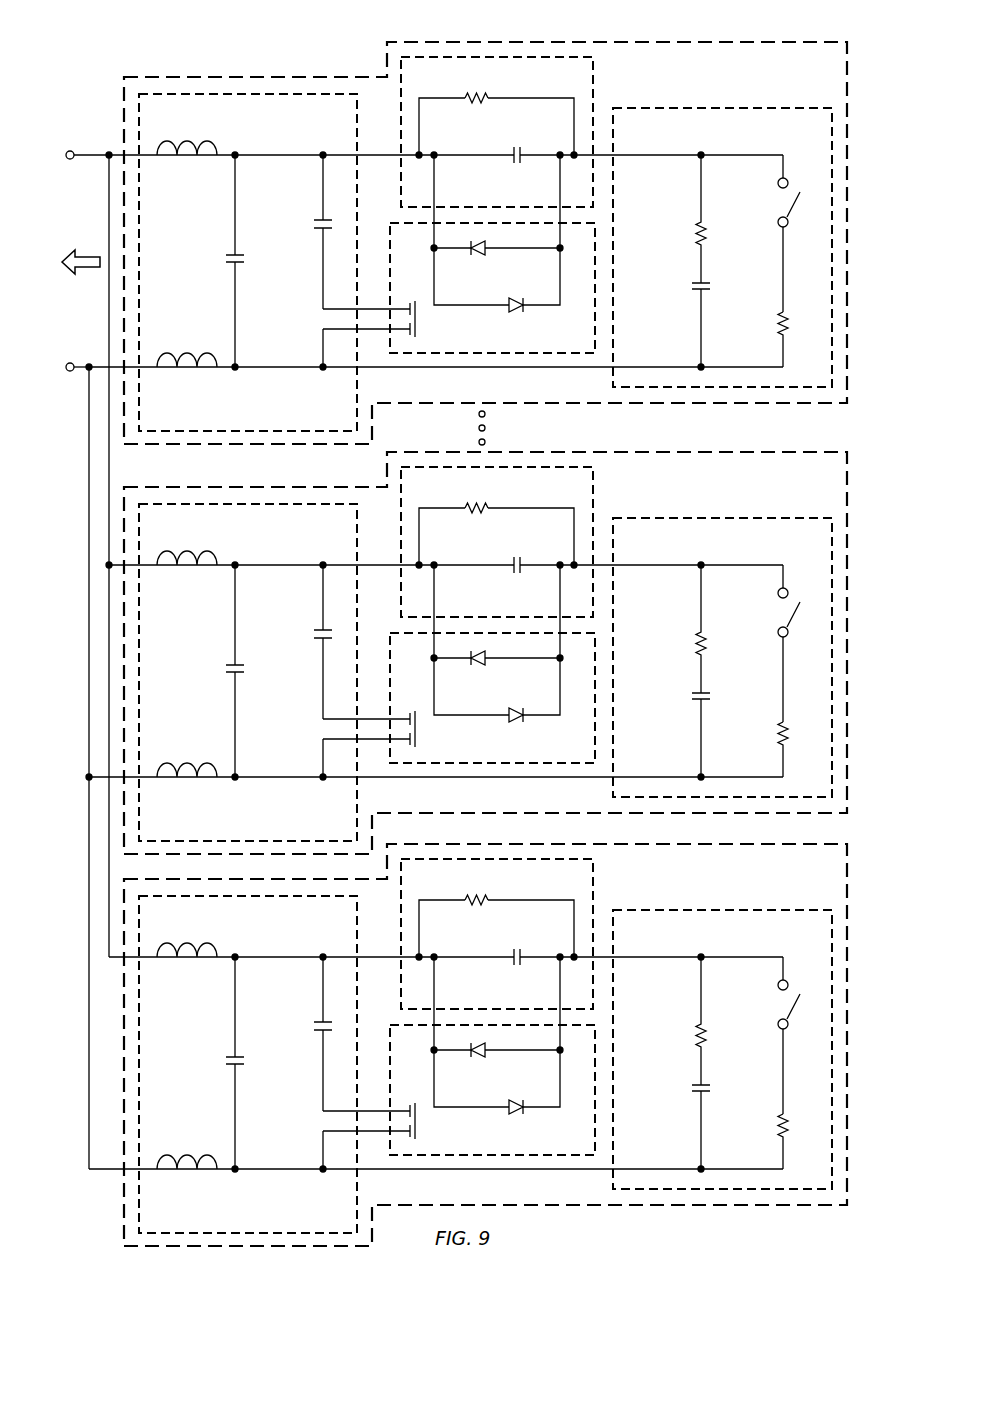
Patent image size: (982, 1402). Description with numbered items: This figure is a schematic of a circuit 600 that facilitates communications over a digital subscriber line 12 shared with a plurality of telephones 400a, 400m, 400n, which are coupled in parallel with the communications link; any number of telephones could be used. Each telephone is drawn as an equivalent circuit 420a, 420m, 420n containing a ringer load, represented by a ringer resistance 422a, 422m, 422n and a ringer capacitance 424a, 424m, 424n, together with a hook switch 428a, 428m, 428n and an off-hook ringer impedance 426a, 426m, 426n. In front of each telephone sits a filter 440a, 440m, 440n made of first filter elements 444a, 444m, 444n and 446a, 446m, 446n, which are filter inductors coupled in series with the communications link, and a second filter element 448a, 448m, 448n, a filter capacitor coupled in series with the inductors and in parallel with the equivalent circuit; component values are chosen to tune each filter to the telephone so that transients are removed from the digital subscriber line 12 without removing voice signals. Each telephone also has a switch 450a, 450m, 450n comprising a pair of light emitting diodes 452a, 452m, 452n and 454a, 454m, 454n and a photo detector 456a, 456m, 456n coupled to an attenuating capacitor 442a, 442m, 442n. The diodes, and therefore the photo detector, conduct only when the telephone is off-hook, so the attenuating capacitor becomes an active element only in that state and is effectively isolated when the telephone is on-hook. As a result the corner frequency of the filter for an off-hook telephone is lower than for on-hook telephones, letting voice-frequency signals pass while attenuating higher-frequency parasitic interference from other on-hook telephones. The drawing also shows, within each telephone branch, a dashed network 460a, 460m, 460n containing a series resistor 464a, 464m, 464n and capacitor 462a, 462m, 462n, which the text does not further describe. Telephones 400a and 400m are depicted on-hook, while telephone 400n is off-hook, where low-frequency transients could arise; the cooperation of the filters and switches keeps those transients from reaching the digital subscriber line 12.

The circuit 600 is at (220, 63).
The digital subscriber line 12 is at (65, 262).
The telephone 400a is at (826, 79).
The telephone 400m is at (485, 653).
The telephone 400n is at (485, 1045).
The filter 440a is at (297, 413).
The filter 440m is at (248, 672).
The filter 440n is at (248, 1064).
The first filter element 444a is at (196, 157).
The first filter element 444m is at (186, 572).
The first filter element 444n is at (186, 964).
The first filter element 446a is at (196, 369).
The first filter element 446m is at (186, 783).
The first filter element 446n is at (186, 1175).
The second filter element 448a is at (226, 256).
The second filter element 448m is at (213, 671).
The second filter element 448n is at (214, 1063).
The attenuating capacitor 442a is at (316, 222).
The attenuating capacitor 442m is at (296, 671).
The attenuating capacitor 442n is at (297, 1063).
The damping network 460a is at (596, 82).
The damping network 460m is at (540, 542).
The damping network 460n is at (537, 934).
The resistor RDF 464a is at (470, 102).
The resistor RDF 464m is at (467, 517).
The resistor RDF 464n is at (467, 909).
The capacitor CDF 462a is at (517, 146).
The capacitor CDF 462m is at (533, 561).
The capacitor CDF 462n is at (529, 953).
The switch 450a is at (575, 341).
The switch 450m is at (492, 662).
The switch 450n is at (492, 1054).
The light emitting diode 452a is at (474, 257).
The light emitting diode 452m is at (473, 680).
The light emitting diode 452n is at (470, 1072).
The light emitting diode 454a is at (514, 297).
The light emitting diode 454m is at (532, 694).
The light emitting diode 454n is at (529, 1086).
The photo detector 456a is at (420, 322).
The photo detector 456m is at (412, 731).
The photo detector 456n is at (408, 1123).
The equivalent circuit 420a is at (750, 143).
The equivalent circuit 420m is at (722, 657).
The equivalent circuit 420n is at (722, 1049).
The ringer resistance 422a is at (695, 232).
The ringer resistance 422m is at (678, 629).
The ringer resistance 422n is at (679, 1021).
The ringer capacitance 424a is at (692, 290).
The ringer capacitance 424m is at (681, 729).
The ringer capacitance 424n is at (682, 1121).
The off-hook ringer impedance 426a is at (778, 323).
The off-hook ringer impedance 426m is at (770, 747).
The off-hook ringer impedance 426n is at (771, 1139).
The hook switch 428a is at (780, 205).
The hook switch 428m is at (755, 643).
The hook switch 428n is at (756, 1035).